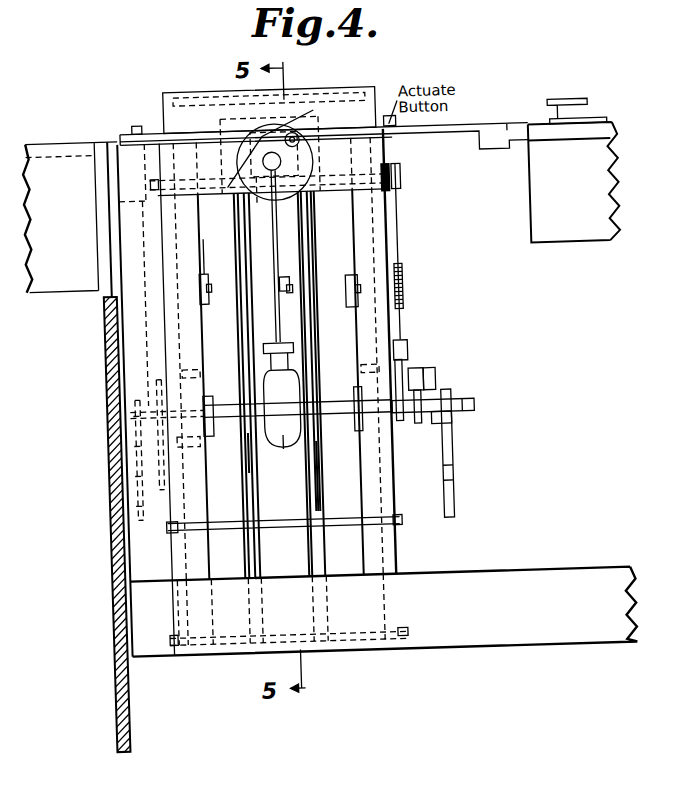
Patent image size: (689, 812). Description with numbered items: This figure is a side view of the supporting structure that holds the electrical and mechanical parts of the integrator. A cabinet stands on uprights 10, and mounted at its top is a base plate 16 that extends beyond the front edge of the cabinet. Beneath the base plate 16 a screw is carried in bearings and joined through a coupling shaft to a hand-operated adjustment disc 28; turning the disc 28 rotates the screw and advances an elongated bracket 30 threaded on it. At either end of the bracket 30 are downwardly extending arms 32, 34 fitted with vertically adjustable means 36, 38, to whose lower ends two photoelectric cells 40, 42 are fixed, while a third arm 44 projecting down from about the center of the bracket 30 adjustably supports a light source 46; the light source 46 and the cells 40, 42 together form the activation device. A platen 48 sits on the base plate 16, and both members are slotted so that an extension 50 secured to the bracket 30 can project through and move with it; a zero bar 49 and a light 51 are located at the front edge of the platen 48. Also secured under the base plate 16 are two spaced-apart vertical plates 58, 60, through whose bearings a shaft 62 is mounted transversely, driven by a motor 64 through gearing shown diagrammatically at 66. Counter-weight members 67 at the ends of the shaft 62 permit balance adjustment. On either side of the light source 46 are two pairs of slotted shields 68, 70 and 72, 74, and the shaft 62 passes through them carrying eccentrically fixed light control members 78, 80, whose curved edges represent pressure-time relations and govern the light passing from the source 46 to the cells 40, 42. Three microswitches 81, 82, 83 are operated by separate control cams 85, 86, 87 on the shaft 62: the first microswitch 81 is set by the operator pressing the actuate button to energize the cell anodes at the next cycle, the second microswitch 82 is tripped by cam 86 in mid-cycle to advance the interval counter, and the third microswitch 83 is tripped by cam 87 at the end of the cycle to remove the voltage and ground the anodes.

The uprights 10 is at (121, 714).
The base plate 16 is at (125, 134).
The hand-operated adjustment disc 28 is at (317, 221).
The bracket 30 is at (269, 175).
The arm 32 is at (354, 242).
The arm 34 is at (204, 258).
The vertically adjustable means 36 is at (351, 293).
The vertically adjustable means 38 is at (214, 289).
The photoelectric cell 40 is at (333, 402).
The photoelectric cell 42 is at (221, 396).
The third arm 44 is at (289, 256).
The light source 46 is at (282, 413).
The platen 48 is at (136, 128).
The zero bar 49 is at (148, 124).
The extension 50 is at (299, 124).
The light 51 is at (379, 89).
The vertical plate 58 is at (389, 281).
The vertical plate 60 is at (194, 252).
The shaft 62 is at (457, 405).
The motor 64 is at (178, 482).
The gearing 66 is at (158, 377).
The counter-weight members 67 is at (132, 476).
The shield 68 is at (311, 363).
The shield 70 is at (315, 341).
The shield 72 is at (252, 324).
The shield 74 is at (248, 354).
The light control member 78 is at (314, 471).
The light control member 80 is at (250, 446).
The first microswitch 81 is at (406, 360).
The second microswitch 82 is at (421, 372).
The third microswitch 83 is at (433, 378).
The control cam 85 is at (401, 442).
The control cam 86 is at (418, 427).
The control cam 87 is at (447, 425).